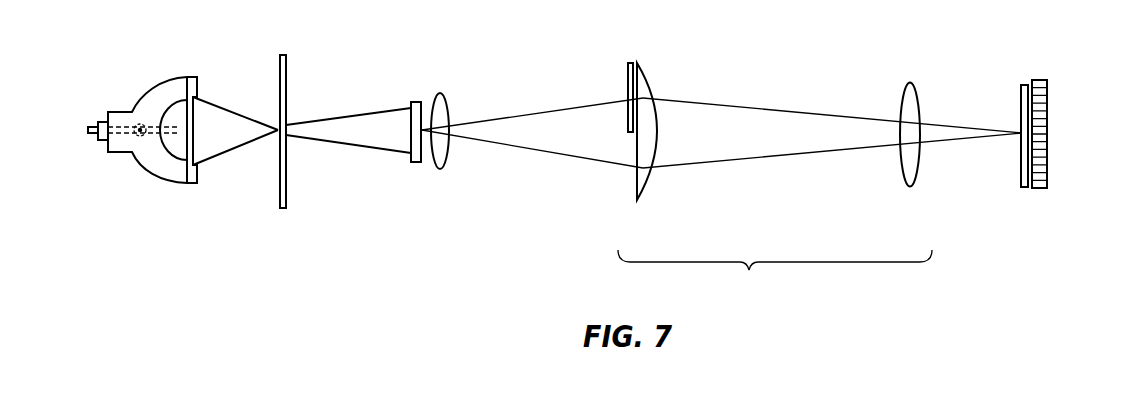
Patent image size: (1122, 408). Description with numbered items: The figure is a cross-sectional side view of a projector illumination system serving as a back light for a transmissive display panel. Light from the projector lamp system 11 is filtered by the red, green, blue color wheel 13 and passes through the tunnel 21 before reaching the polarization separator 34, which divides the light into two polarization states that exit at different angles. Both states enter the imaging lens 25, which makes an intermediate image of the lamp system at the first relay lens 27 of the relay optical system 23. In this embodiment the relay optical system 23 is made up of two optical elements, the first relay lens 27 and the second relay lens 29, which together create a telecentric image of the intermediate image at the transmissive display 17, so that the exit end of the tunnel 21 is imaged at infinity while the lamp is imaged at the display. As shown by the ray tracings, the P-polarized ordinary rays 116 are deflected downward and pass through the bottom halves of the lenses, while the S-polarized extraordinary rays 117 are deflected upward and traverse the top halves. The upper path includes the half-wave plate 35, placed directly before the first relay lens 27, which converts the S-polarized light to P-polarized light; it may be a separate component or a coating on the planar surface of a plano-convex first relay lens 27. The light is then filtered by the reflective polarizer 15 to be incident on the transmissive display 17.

The projector lamp system 11 is at (151, 89).
The color wheel 13 is at (280, 199).
The tunnel 21 is at (330, 118).
The polarization separator 34 is at (417, 102).
The imaging lens 25 is at (441, 170).
The S-polarized extraordinary rays 117 is at (548, 113).
The P-polarized ordinary rays 116 is at (556, 150).
The half-wave plate 35 is at (628, 66).
The first relay lens 27 is at (641, 200).
The second relay lens 29 is at (906, 188).
The relay optical system 23 is at (775, 273).
The reflective polarizer 15 is at (1024, 188).
The transmissive display 17 is at (1047, 88).